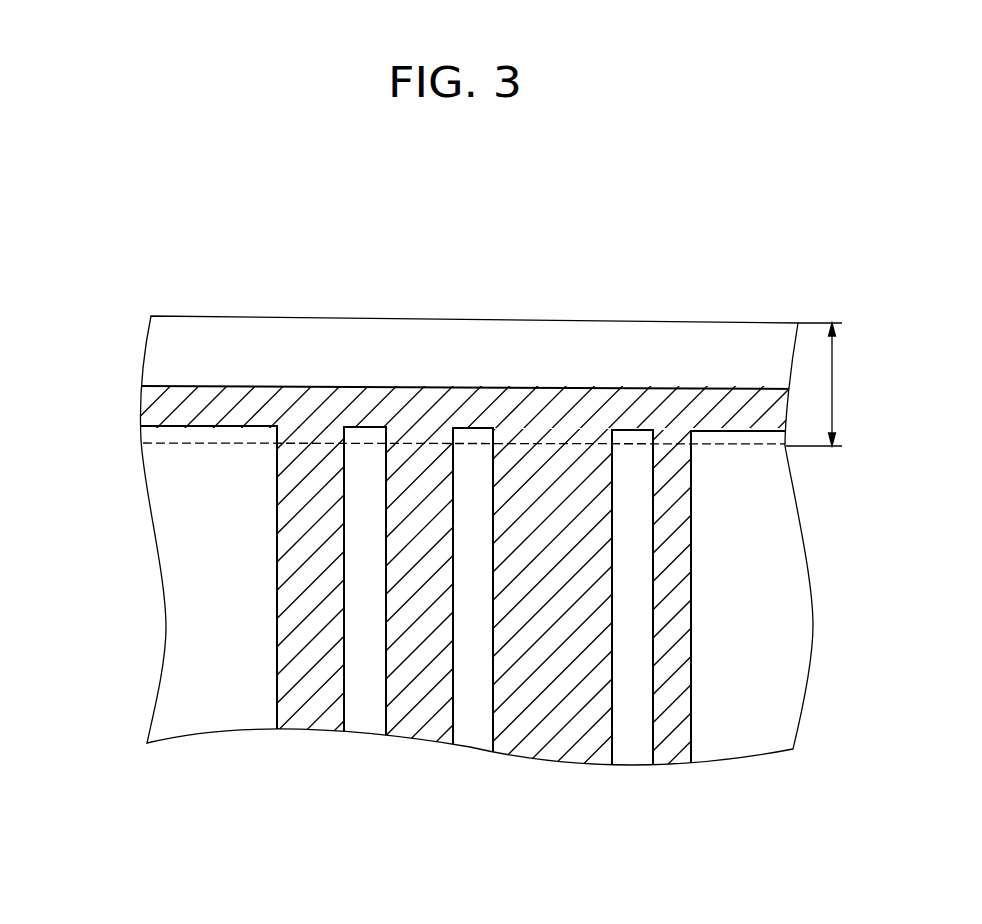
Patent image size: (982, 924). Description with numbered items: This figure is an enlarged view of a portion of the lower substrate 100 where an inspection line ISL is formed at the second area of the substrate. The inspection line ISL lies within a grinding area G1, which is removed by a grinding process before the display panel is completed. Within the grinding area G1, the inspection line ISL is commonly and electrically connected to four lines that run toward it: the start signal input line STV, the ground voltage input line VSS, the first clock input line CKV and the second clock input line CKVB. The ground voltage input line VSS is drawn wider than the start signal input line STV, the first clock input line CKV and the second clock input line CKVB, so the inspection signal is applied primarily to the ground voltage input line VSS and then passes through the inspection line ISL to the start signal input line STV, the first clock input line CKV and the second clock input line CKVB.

The lower substrate 100 is at (456, 261).
The inspection line ISL is at (148, 407).
The grinding area G1 is at (825, 384).
The second clock input line CKVB is at (491, 594).
The first clock input line CKV is at (491, 594).
The ground voltage input line VSS is at (491, 595).
The start signal input line STV is at (491, 595).